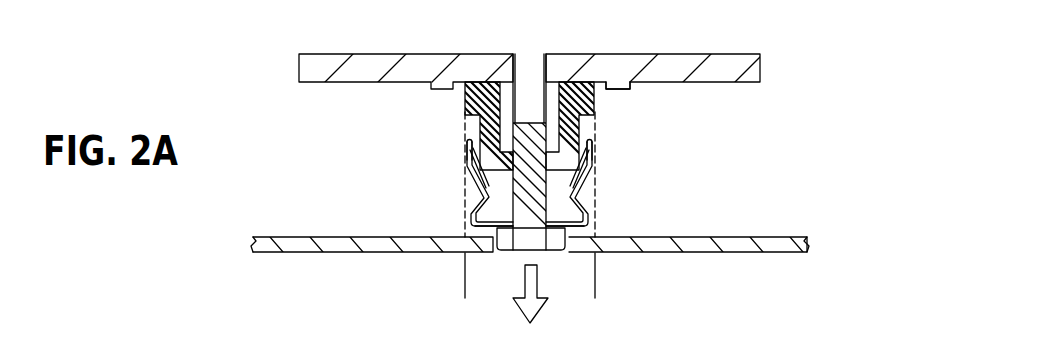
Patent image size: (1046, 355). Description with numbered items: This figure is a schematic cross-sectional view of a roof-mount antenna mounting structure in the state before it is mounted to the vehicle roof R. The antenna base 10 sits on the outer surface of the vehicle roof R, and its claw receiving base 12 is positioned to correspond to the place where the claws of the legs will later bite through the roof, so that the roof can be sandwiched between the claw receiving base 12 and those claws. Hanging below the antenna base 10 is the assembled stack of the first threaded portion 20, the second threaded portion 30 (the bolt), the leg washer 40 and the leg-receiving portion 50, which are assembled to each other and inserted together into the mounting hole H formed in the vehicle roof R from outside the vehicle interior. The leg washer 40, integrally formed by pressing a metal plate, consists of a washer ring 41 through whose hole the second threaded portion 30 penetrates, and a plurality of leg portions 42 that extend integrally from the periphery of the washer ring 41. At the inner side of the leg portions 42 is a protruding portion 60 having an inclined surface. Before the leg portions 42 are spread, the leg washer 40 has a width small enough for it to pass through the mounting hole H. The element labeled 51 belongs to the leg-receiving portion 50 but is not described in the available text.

The antenna base 10 is at (748, 68).
The claw receiving base 12 is at (626, 89).
The first threaded portion 20 is at (468, 105).
The second threaded portion 30 is at (562, 233).
The leg washer 40 is at (462, 210).
The washer ring 41 is at (598, 238).
The leg portion 42 is at (596, 172).
The leg-receiving portion 50 is at (467, 128).
The bent portion 51 is at (470, 155).
The protruding portion 60 is at (588, 192).
The mounting hole H is at (468, 244).
The vehicle roof R is at (362, 253).